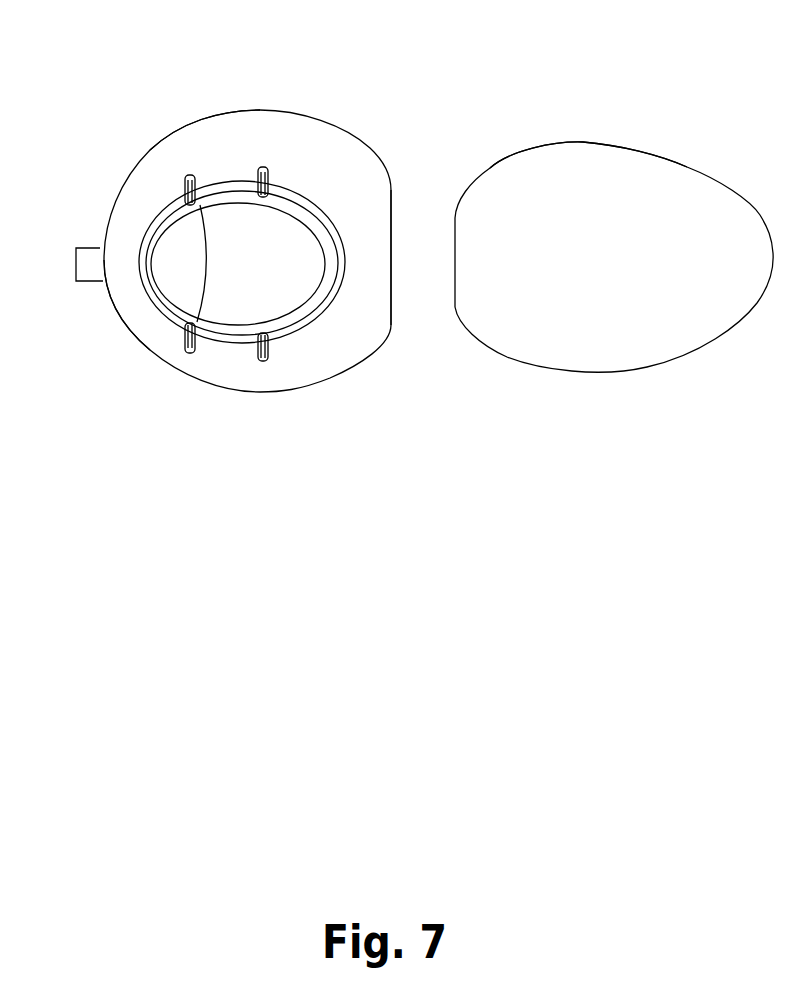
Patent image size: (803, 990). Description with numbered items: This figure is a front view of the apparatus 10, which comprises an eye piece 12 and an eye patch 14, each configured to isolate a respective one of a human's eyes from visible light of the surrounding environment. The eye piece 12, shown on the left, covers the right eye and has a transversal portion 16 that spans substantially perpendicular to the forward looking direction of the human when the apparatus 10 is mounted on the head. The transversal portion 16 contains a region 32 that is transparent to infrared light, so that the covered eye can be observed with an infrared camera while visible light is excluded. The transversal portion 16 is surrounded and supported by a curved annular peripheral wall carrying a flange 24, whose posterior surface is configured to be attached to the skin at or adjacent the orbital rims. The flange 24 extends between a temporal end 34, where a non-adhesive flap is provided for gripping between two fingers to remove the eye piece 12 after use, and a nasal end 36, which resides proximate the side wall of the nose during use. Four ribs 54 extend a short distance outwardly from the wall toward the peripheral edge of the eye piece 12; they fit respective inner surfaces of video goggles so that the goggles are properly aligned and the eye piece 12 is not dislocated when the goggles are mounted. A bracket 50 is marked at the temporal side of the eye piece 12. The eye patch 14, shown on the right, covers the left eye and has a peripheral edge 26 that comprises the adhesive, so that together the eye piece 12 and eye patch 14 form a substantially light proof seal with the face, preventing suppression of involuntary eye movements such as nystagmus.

The apparatus 10 is at (432, 76).
The eye piece 12 is at (348, 136).
The eye patch 14 is at (688, 166).
The transversal portion 16 is at (262, 311).
The flange 24 is at (160, 157).
The peripheral edge 26 is at (617, 144).
The region 32 is at (268, 268).
The temporal end 34 is at (132, 292).
The nasal end 36 is at (389, 325).
The bracket region 50 is at (76, 264).
The ribs 54 is at (262, 362).